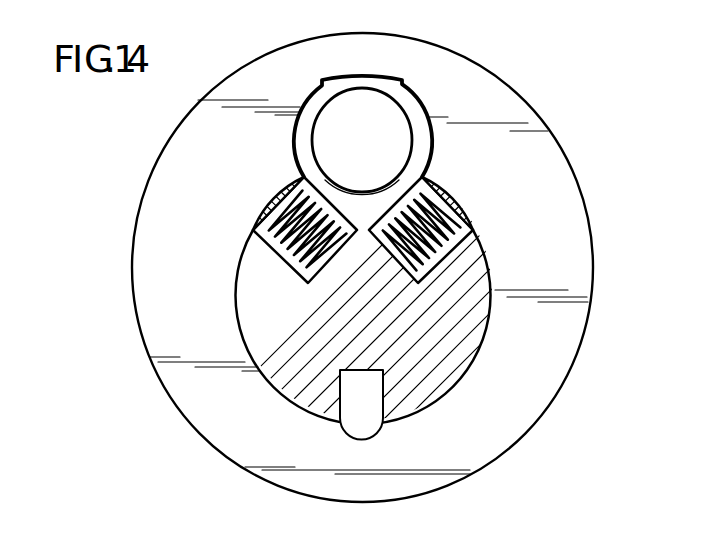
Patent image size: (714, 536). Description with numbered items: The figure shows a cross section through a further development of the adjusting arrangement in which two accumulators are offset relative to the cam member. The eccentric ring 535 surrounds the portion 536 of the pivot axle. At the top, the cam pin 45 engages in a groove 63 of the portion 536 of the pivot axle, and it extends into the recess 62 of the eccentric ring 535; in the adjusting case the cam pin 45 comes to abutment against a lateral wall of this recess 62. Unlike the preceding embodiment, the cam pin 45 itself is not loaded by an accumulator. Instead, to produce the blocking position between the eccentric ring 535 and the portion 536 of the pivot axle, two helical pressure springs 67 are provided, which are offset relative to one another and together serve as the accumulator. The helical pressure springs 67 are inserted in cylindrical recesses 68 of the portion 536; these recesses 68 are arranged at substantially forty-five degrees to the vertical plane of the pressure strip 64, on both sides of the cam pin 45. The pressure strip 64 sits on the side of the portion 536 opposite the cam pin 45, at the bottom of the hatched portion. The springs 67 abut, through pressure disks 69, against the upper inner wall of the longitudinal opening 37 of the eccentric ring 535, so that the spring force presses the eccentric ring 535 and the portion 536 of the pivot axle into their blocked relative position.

The eccentric ring 535 is at (258, 77).
The portion of the pivot axle 536 is at (264, 287).
The recess of the eccentric ring 62 is at (307, 98).
The cam pin 45 is at (397, 118).
The groove 63 is at (418, 176).
The pressure disks 69 is at (274, 183).
The longitudinal opening of the eccentric ring 37 is at (247, 223).
The cylindrical recesses 68 is at (246, 250).
The helical pressure springs 67 is at (283, 291).
The pressure strip 64 is at (371, 425).